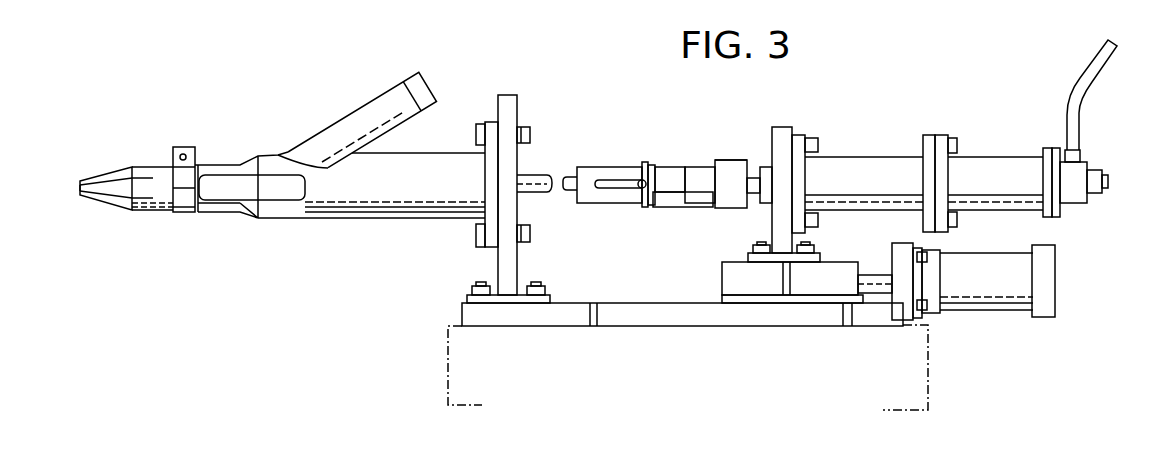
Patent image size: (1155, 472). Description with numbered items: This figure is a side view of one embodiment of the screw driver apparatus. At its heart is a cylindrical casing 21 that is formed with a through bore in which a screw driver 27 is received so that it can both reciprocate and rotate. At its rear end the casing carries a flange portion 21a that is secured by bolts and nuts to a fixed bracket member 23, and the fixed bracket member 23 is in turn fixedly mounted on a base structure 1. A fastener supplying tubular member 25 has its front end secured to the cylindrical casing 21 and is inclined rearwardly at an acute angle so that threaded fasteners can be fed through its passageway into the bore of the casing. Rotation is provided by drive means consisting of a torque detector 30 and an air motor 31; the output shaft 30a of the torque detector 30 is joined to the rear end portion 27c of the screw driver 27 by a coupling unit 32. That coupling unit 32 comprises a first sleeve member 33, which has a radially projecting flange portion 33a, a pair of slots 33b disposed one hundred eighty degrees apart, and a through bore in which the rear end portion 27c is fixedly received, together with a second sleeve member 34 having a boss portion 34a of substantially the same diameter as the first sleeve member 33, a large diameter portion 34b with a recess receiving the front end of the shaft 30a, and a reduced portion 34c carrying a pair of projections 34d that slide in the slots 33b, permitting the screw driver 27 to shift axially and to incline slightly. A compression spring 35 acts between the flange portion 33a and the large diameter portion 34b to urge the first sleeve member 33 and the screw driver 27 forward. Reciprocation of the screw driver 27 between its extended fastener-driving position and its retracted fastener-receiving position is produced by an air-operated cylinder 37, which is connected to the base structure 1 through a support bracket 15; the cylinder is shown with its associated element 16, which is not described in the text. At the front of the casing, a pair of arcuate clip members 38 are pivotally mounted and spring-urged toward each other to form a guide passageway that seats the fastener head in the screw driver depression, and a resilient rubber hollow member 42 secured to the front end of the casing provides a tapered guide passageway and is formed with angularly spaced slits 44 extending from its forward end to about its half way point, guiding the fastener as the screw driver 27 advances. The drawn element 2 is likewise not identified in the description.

The base structure 1 is at (447, 346).
The support plate 2 is at (794, 123).
The support bracket 15 is at (900, 243).
The piston rod 16 is at (877, 277).
The cylindrical casing 21 is at (307, 222).
The flange portion 21a is at (488, 122).
The fixed bracket member 23 is at (510, 92).
The fastener supplying tubular member 25 is at (362, 107).
The screw driver 27 is at (537, 166).
The rear end portion 27c is at (568, 191).
The torque detector 30 is at (875, 157).
The output shaft 30a is at (772, 148).
The air motor 31 is at (993, 157).
The coupling unit 32 is at (665, 169).
The first sleeve member 33 is at (594, 160).
The flange portion 33a is at (648, 150).
The slots 33b is at (603, 188).
The second sleeve member 34 is at (733, 215).
The boss portion 34a is at (717, 146).
The large diameter portion 34b is at (733, 160).
The reduced portion 34c is at (678, 201).
The projections 34d is at (641, 194).
The compression spring 35 is at (650, 166).
The air-operated cylinder 37 is at (982, 311).
The arcuate clip members 38 is at (228, 180).
The hollow member 42 is at (160, 167).
The slits 44 is at (123, 200).